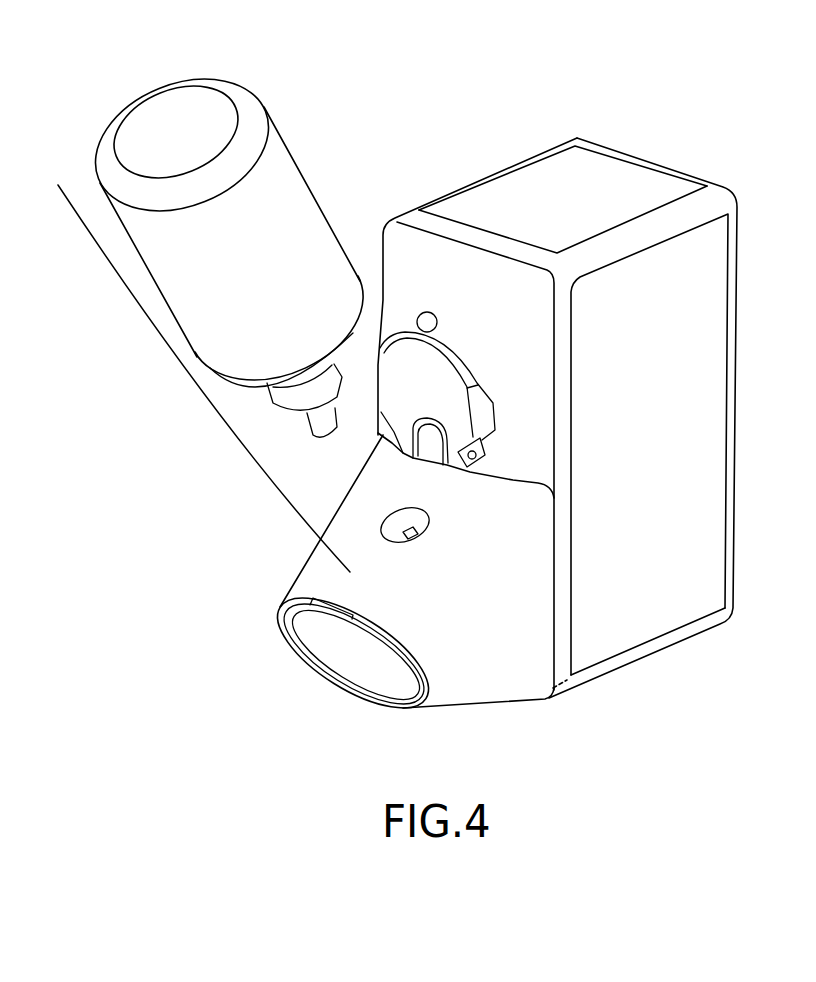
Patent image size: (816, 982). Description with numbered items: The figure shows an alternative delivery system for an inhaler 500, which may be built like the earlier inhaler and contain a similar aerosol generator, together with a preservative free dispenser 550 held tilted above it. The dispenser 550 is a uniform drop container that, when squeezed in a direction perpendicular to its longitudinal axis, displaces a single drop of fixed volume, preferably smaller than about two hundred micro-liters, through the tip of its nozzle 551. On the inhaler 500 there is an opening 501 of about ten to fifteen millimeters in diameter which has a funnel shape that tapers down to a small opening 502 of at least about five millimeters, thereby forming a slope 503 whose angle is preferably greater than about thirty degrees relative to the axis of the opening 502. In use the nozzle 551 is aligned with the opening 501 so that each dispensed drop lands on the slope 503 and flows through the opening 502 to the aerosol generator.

The inhaler 500 is at (499, 371).
The opening 501 is at (392, 512).
The small opening 502 is at (428, 520).
The slope 503 is at (385, 532).
The preservative free dispenser 550 is at (243, 112).
The nozzle 551 is at (317, 432).